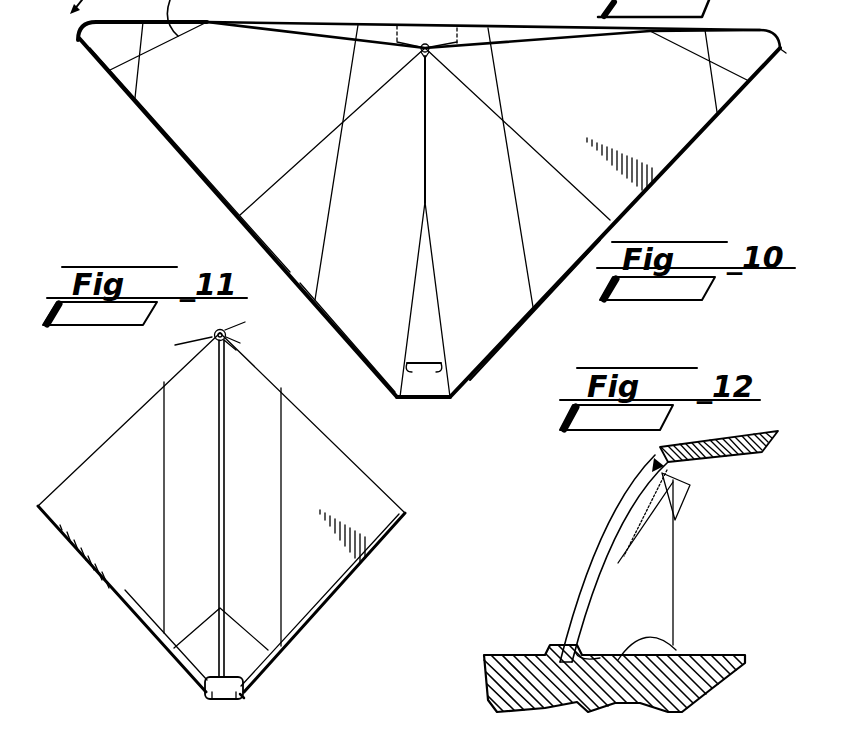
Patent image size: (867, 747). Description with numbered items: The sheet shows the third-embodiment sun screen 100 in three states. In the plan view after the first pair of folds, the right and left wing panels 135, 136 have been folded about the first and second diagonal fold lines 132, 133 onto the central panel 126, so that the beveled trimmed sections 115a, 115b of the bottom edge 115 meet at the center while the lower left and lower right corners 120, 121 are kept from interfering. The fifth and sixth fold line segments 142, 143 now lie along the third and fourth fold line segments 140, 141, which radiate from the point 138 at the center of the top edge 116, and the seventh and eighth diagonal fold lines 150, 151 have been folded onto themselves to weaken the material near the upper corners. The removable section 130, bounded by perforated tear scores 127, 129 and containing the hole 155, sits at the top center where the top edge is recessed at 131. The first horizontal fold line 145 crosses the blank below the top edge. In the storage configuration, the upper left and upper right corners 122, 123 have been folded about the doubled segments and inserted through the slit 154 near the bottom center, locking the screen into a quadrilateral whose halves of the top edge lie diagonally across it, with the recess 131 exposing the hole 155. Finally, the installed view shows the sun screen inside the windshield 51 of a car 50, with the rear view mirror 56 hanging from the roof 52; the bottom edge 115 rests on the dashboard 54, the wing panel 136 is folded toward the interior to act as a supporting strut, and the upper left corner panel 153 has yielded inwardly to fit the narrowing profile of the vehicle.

In FIG. 10, the sun screen 100 is at (148, 186).
In FIG. 10, the removable section 130 is at (401, 30).
In FIG. 11, the removable section 130 is at (232, 330).
In FIG. 10, the recess 131 is at (425, 16).
In FIG. 11, the recess 131 is at (230, 340).
In FIG. 10, the hole 155 is at (420, 62).
In FIG. 11, the hole 155 is at (228, 330).
In FIG. 10, the lower right corner 121 is at (418, 76).
In FIG. 10, the lower left corner 120 is at (442, 70).
In FIG. 10, the beveled portion of bottom edge 115a is at (428, 145).
In FIG. 10, the beveled portion of bottom edge 115b is at (424, 156).
In FIG. 10, the fifth fold line segment 142 is at (303, 152).
In FIG. 10, the sixth fold line segment 143 is at (548, 157).
In FIG. 12, the sixth fold line segment 143 is at (655, 612).
In FIG. 10, the seventh diagonal fold line 150 is at (676, 43).
In FIG. 11, the seventh diagonal fold line 150 is at (262, 637).
In FIG. 10, the upper left corner 122 is at (786, 56).
In FIG. 11, the upper left corner 122 is at (244, 700).
In FIG. 10, the left wing panel 136 is at (658, 158).
In FIG. 12, the left wing panel 136 is at (648, 618).
In FIG. 10, the right wing panel 135 is at (285, 243).
In FIG. 10, the first diagonal fold line 132 is at (345, 348).
In FIG. 11, the first diagonal fold line 132 is at (120, 600).
In FIG. 10, the bottom edge 115 is at (400, 363).
In FIG. 12, the bottom edge 115 is at (672, 646).
In FIG. 10, the slit 154 is at (424, 366).
In FIG. 11, the slit 154 is at (268, 670).
In FIG. 10, the second diagonal fold line 133 is at (560, 278).
In FIG. 11, the second diagonal fold line 133 is at (328, 603).
In FIG. 12, the second diagonal fold line 133 is at (683, 517).
In FIG. 11, the perforated tear score 127 is at (205, 305).
In FIG. 11, the point at center of top edge 138 is at (205, 328).
In FIG. 11, the third diagonal fold line segment 140 is at (130, 397).
In FIG. 11, the fourth diagonal fold line segment 141 is at (368, 470).
In FIG. 11, the perforated tear score 129 is at (234, 368).
In FIG. 11, the top edge 116 is at (218, 432).
In FIG. 11, the first horizontal fold line 145 is at (165, 500).
In FIG. 11, the eighth diagonal fold line 151 is at (200, 640).
In FIG. 12, the eighth diagonal fold line 151 is at (684, 522).
In FIG. 11, the upper right corner 123 is at (205, 697).
In FIG. 12, the dashboard 54 is at (745, 656).
In FIG. 12, the car 50 is at (537, 600).
In FIG. 12, the windshield 51 is at (585, 572).
In FIG. 12, the roof 52 is at (678, 442).
In FIG. 12, the rear view mirror 56 is at (652, 486).
In FIG. 12, the upper left corner panel 153 is at (680, 482).
In FIG. 12, the central panel 126 is at (647, 503).